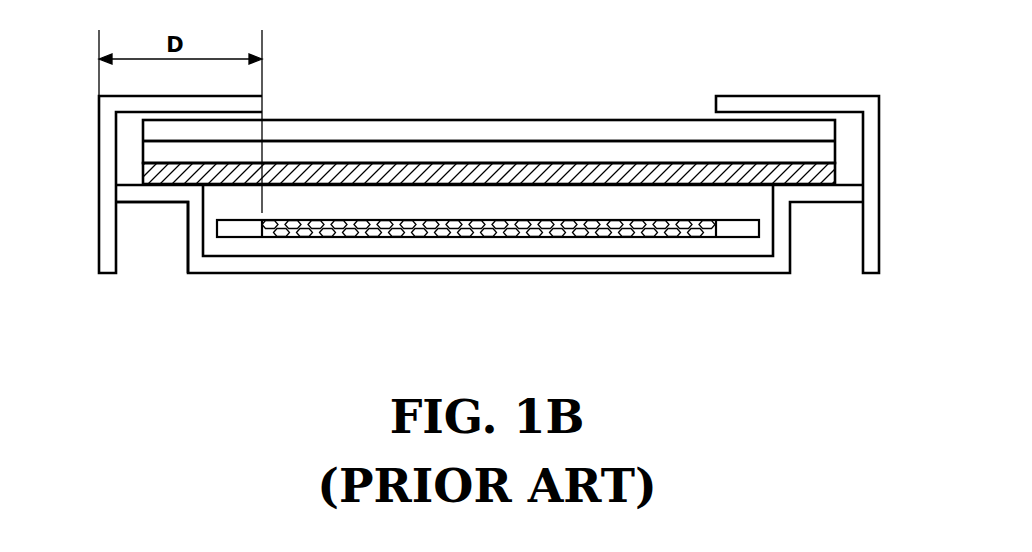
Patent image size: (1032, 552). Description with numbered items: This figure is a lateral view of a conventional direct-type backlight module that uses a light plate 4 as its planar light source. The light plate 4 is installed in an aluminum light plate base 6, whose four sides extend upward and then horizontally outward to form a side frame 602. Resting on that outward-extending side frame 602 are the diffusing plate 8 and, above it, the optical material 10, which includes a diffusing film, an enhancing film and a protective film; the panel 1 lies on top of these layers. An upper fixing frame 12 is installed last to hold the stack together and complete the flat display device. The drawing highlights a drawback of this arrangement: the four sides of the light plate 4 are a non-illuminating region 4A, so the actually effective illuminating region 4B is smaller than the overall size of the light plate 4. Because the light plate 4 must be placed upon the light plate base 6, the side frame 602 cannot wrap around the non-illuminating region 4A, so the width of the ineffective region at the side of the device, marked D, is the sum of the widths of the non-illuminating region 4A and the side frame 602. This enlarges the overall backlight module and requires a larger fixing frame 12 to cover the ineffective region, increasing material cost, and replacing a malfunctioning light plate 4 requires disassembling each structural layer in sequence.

The liquid crystal panel 1 is at (485, 128).
The optical material 10 is at (153, 152).
The diffusing plate 8 is at (142, 177).
The upper fixing frame 12 is at (876, 166).
The light plate base 6 is at (448, 265).
The side frame 602 is at (148, 195).
The light plate 4 is at (488, 298).
The non-illuminating region 4A is at (735, 230).
The effective illuminating region 4B is at (488, 276).